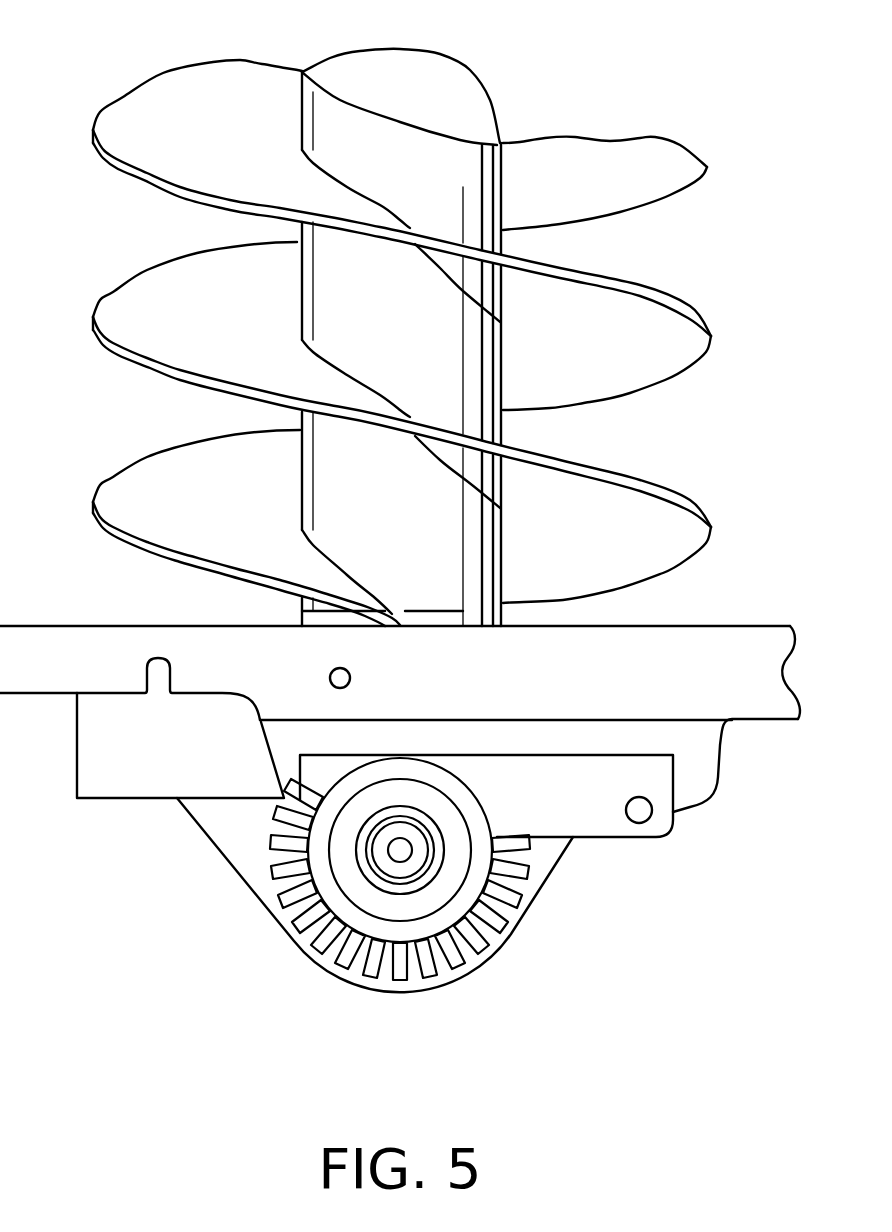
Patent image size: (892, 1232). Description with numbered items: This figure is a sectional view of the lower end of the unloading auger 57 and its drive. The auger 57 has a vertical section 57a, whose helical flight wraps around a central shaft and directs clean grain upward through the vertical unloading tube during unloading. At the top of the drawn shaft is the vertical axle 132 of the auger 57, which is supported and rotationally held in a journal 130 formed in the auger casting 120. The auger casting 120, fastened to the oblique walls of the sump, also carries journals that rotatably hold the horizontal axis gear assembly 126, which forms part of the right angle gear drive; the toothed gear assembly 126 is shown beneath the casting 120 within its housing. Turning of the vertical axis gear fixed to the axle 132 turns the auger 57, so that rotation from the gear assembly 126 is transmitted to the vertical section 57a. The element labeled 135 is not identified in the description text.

The unloading auger 57 is at (393, 319).
The vertical section 57a is at (500, 114).
The auger casting 120 is at (236, 878).
The horizontal axis gear assembly 126 is at (485, 955).
The journal 130 is at (434, 606).
The vertical axle 132 is at (423, 88).
The upper flight portion 135 is at (650, 137).